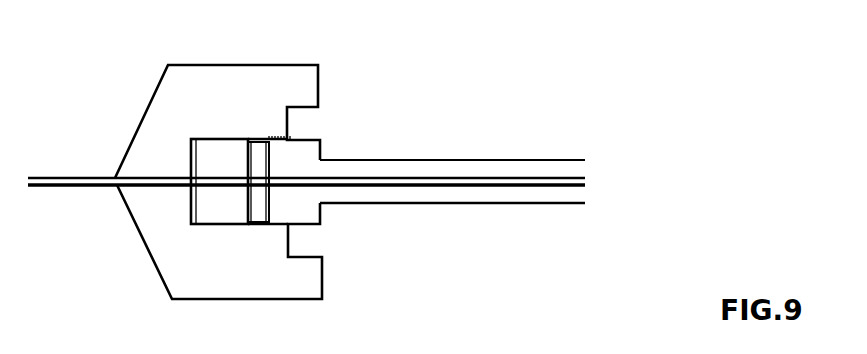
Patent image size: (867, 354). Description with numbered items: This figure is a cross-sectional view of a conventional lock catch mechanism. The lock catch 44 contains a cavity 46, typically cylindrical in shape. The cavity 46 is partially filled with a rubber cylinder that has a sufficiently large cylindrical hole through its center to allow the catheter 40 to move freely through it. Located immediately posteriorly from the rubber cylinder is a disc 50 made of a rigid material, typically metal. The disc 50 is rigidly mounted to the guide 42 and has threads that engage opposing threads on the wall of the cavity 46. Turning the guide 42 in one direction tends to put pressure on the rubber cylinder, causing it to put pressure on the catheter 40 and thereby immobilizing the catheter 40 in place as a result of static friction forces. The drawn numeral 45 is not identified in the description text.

The catheter 40 is at (63, 188).
The guide 42 is at (518, 167).
The lock catch 44 is at (270, 75).
The chamber 45 is at (220, 210).
The cavity 46 is at (217, 139).
The disc 50 is at (258, 162).